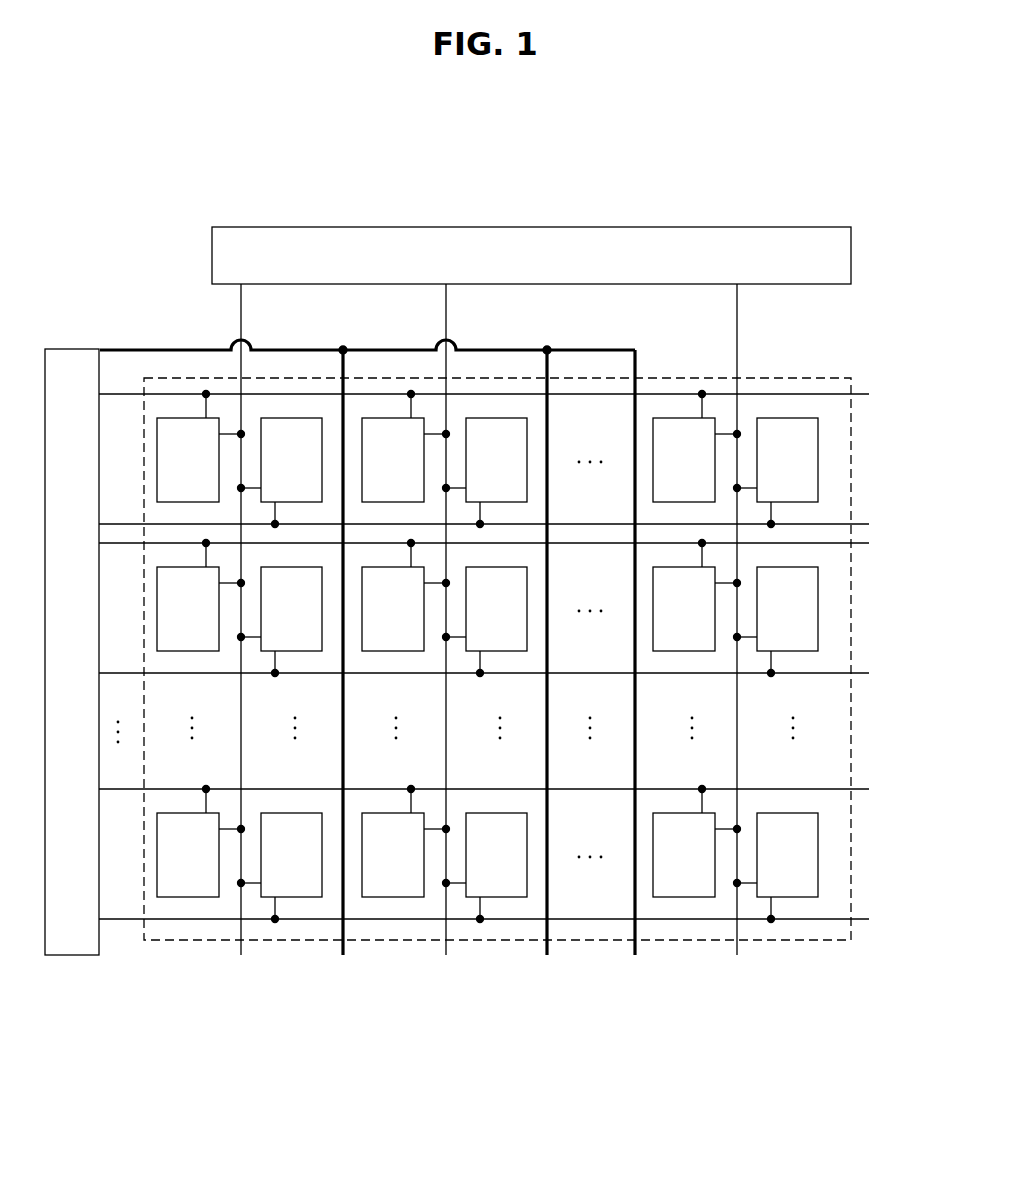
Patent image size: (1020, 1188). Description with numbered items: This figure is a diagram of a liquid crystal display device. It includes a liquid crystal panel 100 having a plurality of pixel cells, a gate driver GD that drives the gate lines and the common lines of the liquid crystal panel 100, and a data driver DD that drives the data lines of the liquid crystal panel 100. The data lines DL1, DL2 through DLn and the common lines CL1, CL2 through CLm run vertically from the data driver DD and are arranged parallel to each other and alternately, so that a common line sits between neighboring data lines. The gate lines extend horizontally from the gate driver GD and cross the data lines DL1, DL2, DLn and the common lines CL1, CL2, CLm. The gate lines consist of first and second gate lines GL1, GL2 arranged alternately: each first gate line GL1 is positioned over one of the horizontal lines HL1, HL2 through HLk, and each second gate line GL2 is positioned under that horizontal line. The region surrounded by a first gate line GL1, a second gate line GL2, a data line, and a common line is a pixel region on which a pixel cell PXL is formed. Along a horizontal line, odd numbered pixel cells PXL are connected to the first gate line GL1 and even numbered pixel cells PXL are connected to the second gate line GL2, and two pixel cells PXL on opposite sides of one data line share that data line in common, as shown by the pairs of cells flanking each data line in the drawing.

The liquid crystal panel 100 is at (590, 943).
The data driver DD is at (697, 237).
The gate driver GD is at (75, 358).
The data line DL1 is at (241, 323).
The data line DL2 is at (446, 323).
The data line DLn is at (737, 323).
The common line CL1 is at (343, 365).
The common line CL2 is at (547, 365).
The common line CLm is at (635, 365).
The first gate line GL1 is at (484, 579).
The second gate line GL2 is at (484, 710).
The horizontal line HL1 is at (563, 459).
The horizontal line HL2 is at (540, 608).
The horizontal line HLk is at (540, 854).
The pixel cell PXL is at (188, 460).